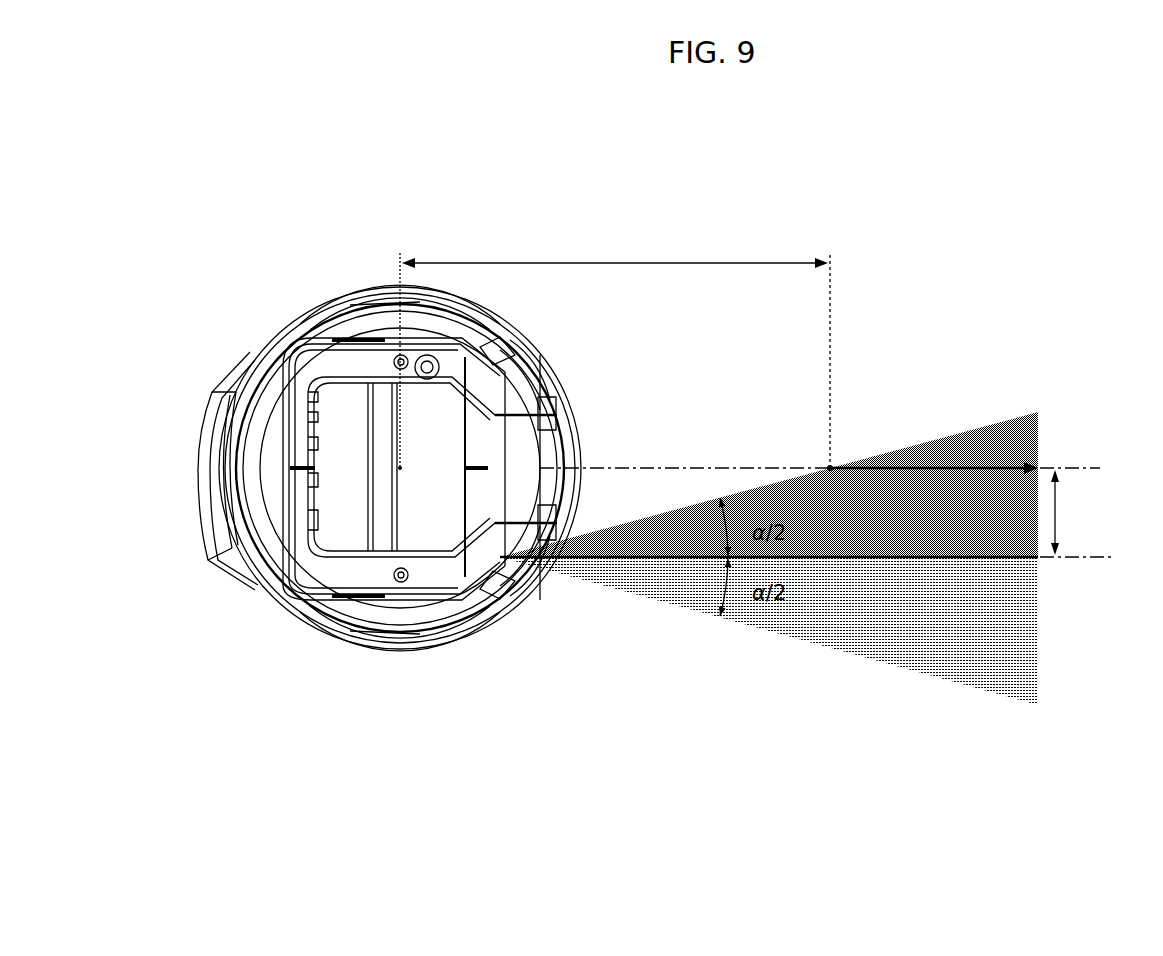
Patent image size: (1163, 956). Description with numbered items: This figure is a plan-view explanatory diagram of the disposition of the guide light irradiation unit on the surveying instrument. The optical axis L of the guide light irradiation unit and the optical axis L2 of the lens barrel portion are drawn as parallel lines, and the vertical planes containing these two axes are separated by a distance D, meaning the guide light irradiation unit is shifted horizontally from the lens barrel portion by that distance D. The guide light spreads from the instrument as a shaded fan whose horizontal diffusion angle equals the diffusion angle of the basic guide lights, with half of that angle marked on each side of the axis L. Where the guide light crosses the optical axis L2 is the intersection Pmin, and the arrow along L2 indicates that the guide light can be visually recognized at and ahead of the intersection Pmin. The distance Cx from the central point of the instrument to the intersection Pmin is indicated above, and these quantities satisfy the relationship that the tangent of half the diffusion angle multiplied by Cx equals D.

The distance to the intersection Cx is at (614, 351).
The intersection Pmin is at (832, 466).
The optical axis of the lens barrel portion L2 is at (839, 469).
The optical axis of the guide light irradiation unit L is at (821, 560).
The distance between optical axes D is at (1064, 512).